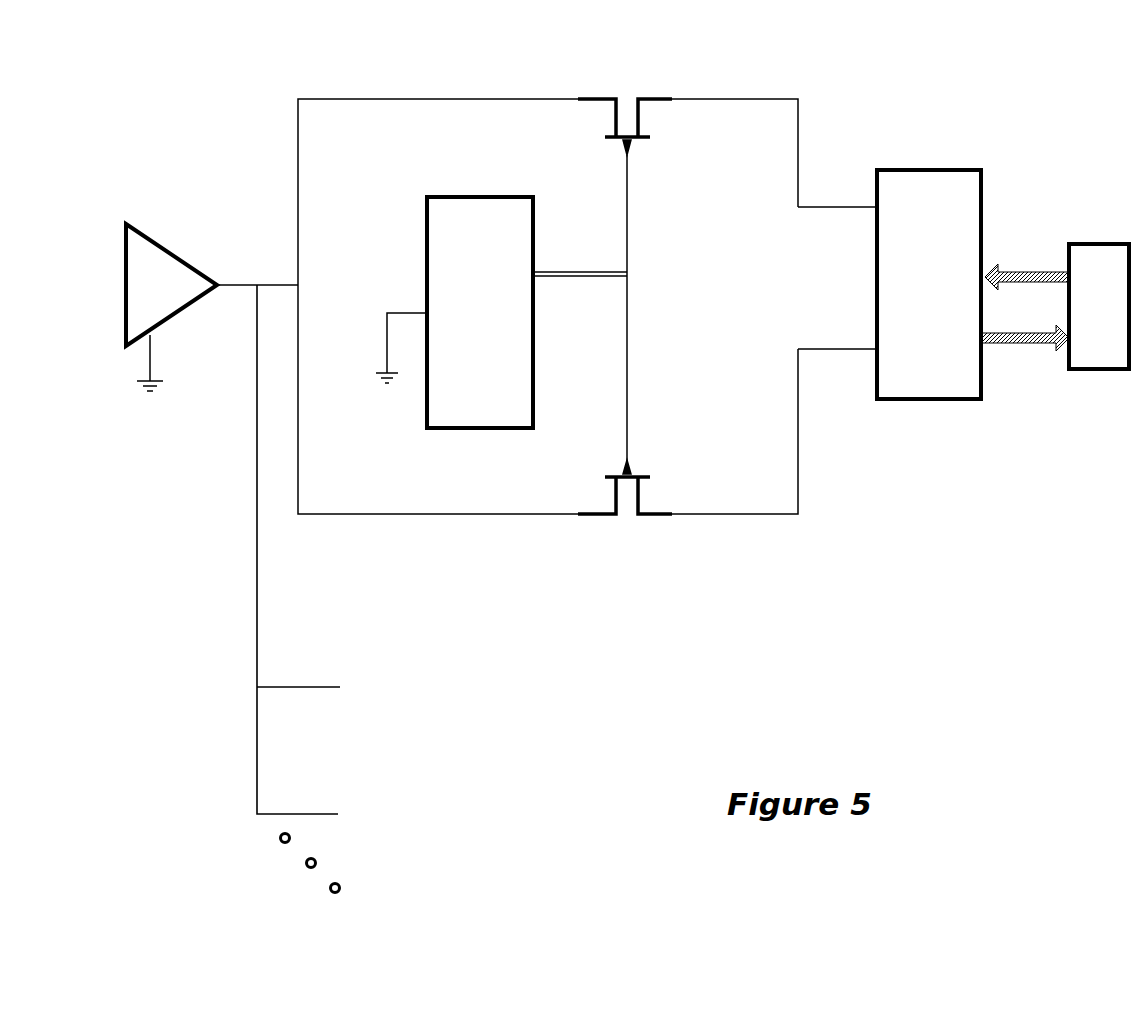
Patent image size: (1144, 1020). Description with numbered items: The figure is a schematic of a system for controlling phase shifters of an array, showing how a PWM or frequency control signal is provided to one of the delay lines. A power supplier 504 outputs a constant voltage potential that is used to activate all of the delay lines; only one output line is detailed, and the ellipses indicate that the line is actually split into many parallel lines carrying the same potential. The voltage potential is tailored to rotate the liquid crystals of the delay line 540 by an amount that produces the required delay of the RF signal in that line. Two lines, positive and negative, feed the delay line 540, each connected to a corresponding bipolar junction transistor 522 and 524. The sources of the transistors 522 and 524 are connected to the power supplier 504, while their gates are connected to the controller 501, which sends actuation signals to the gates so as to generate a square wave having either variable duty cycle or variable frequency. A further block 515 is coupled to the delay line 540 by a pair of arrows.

The power supplier 504 is at (141, 296).
The controller 501 is at (462, 314).
The bipolar junction transistor 522 is at (627, 72).
The bipolar junction transistor 524 is at (622, 537).
The delay line 540 is at (909, 296).
The interface block 515 is at (1081, 316).